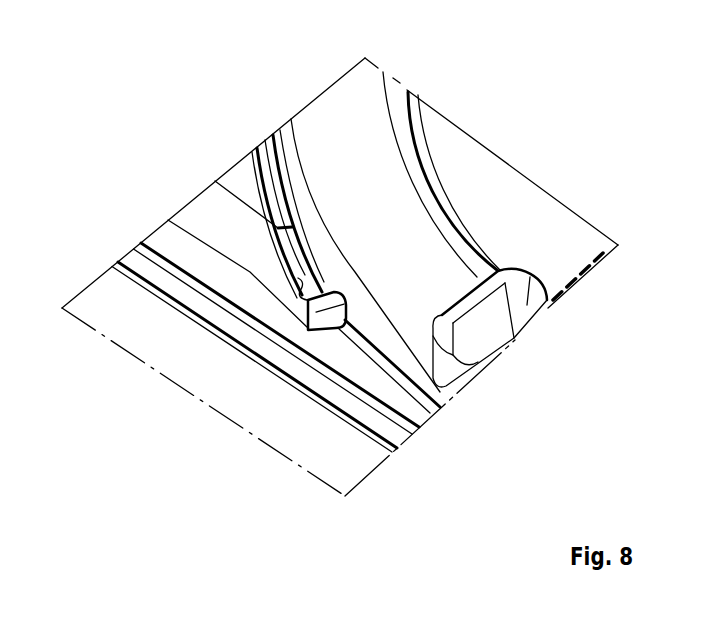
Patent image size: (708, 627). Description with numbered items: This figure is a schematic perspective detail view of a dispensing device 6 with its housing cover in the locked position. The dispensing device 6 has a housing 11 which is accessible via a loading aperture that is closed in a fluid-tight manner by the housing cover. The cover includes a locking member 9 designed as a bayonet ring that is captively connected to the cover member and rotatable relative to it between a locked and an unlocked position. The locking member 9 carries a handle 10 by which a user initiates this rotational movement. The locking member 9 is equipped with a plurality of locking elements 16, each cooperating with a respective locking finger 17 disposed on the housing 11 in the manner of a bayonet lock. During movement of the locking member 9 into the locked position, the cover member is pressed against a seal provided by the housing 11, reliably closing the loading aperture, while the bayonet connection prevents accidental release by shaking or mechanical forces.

The dispensing device 6 is at (564, 131).
The locking member 9 is at (375, 243).
The handle 10 is at (490, 313).
The housing 11 is at (200, 265).
The locking element 16 is at (335, 325).
The locking finger 17 is at (307, 265).